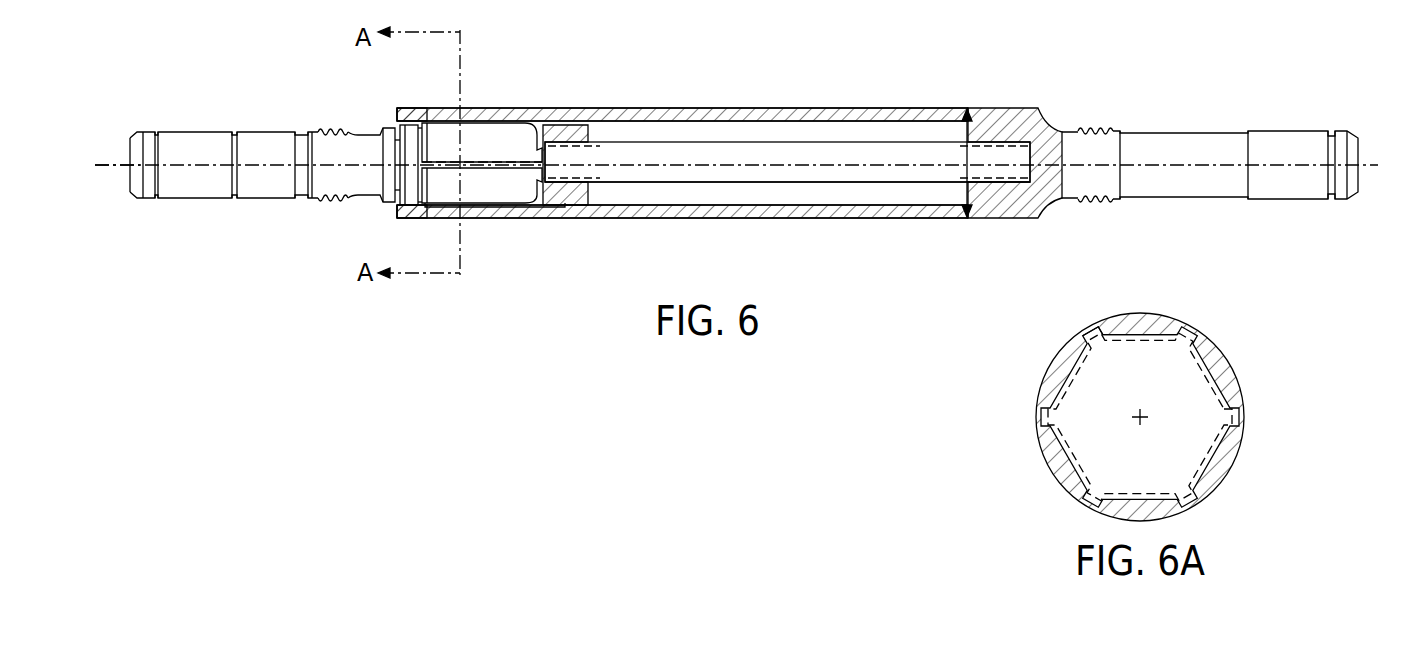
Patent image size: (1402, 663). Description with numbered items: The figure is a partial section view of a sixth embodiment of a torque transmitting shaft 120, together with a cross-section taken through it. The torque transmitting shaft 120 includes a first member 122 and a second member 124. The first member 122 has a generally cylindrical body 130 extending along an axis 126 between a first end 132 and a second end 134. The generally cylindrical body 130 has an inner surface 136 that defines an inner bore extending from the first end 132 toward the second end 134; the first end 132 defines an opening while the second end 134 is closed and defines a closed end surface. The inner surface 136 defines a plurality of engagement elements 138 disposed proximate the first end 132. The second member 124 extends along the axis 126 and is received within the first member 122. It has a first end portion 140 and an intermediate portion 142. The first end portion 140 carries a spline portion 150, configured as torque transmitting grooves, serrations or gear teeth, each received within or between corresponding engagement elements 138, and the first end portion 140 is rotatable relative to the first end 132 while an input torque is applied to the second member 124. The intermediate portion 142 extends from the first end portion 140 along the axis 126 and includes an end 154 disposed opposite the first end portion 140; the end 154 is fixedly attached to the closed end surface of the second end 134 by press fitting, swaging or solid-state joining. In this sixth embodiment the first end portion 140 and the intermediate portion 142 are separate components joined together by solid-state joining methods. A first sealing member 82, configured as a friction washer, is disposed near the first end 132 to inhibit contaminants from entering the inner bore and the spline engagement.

In FIG. 6, the torque transmitting shaft 120 is at (340, 75).
In FIG. 6, the first member 122 is at (868, 88).
In FIG. 6A, the first member 122 is at (1157, 320).
In FIG. 6, the second member 124 is at (268, 108).
In FIG. 6A, the second member 124 is at (1056, 378).
In FIG. 6, the axis 126 is at (103, 172).
In FIG. 6A, the axis 126 is at (1148, 408).
In FIG. 6, the first sealing member 82 is at (405, 207).
In FIG. 6, the first end 132 is at (397, 110).
In FIG. 6, the generally cylindrical body 130 is at (792, 108).
In FIG. 6, the second end 134 is at (1033, 114).
In FIG. 6, the inner surface 136 is at (692, 122).
In FIG. 6A, the plurality of engagement elements 138 is at (1114, 338).
In FIG. 6, the first end portion 140 is at (499, 194).
In FIG. 6, the intermediate portion 142 is at (709, 196).
In FIG. 6A, the spline portion 150 is at (1093, 352).
In FIG. 6, the end 154 is at (990, 152).